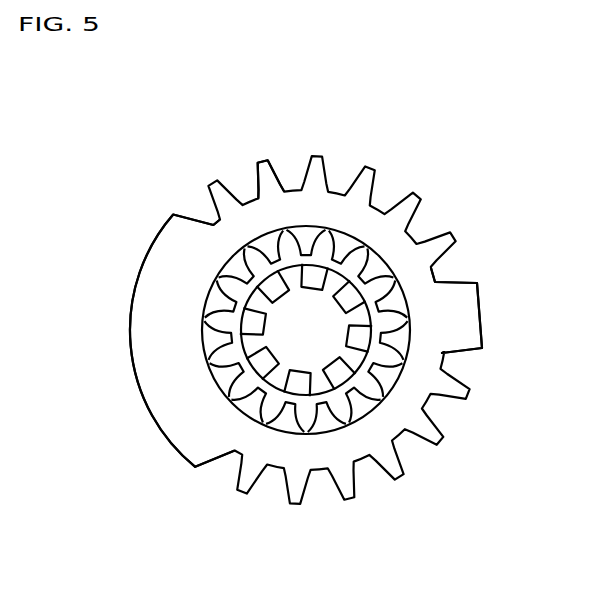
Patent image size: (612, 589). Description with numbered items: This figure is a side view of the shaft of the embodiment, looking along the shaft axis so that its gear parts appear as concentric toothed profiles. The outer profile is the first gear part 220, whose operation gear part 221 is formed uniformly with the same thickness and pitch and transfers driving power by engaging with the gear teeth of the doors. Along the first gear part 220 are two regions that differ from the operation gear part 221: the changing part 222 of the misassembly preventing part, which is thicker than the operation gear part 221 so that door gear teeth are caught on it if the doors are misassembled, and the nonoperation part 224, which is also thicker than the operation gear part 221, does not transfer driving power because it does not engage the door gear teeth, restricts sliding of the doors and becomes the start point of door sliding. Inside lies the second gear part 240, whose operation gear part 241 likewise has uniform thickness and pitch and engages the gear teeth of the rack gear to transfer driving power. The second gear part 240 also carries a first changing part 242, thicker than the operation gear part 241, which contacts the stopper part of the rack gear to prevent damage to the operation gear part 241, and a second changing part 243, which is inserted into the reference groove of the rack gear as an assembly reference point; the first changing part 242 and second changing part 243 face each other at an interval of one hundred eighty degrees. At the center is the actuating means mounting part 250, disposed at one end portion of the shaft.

The first gear part 220 is at (469, 220).
The operation gear part 221 is at (266, 157).
The changing part 222 is at (482, 315).
The nonoperation part 224 is at (137, 310).
The second gear part 240 is at (293, 436).
The operation gear part 241 is at (298, 238).
The first changing part 242 is at (394, 302).
The second changing part 243 is at (210, 343).
The actuating means mounting part 250 is at (329, 318).